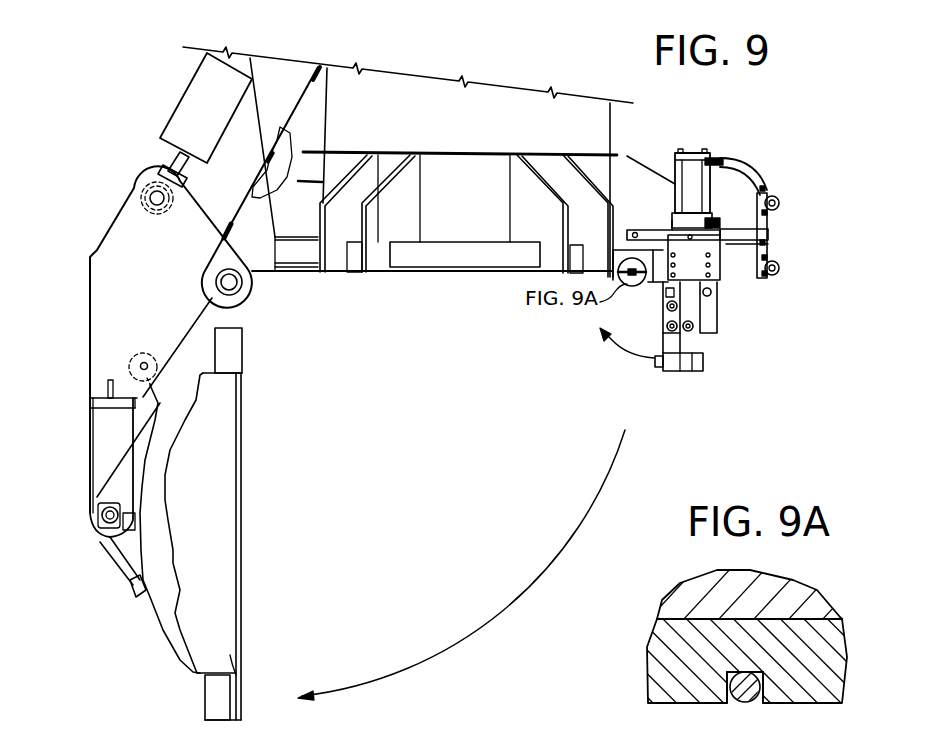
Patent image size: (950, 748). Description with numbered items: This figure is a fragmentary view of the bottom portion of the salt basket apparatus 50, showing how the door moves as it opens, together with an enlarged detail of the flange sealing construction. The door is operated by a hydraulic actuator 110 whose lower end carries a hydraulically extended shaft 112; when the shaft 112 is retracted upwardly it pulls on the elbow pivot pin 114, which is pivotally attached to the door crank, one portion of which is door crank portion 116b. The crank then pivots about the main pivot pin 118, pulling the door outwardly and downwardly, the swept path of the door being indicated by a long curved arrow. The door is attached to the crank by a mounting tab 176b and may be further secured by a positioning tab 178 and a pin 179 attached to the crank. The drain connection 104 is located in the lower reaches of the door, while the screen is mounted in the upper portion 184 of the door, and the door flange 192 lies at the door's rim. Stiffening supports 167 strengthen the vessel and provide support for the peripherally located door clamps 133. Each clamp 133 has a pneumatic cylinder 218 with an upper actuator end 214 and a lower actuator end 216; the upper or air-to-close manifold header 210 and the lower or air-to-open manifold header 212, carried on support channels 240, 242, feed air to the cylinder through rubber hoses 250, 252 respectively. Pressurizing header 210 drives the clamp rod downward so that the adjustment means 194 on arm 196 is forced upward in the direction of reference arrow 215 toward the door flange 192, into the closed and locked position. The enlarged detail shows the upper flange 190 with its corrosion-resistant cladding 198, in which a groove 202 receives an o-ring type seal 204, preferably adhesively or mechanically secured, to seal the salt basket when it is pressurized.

In FIG. 9, the salt basket apparatus 50 is at (128, 72).
In FIG. 9, the actuator 110 is at (178, 128).
In FIG. 9, the hydraulically extended shaft 112 is at (172, 153).
In FIG. 9, the elbow pivot pin 114 is at (150, 200).
In FIG. 9, the door crank portion 116b is at (105, 280).
In FIG. 9, the main pivot pin 118 is at (236, 285).
In FIG. 9, the stiffening supports 167 is at (413, 181).
In FIG. 9, the positioning tab 178 is at (130, 375).
In FIG. 9, the pin 179 is at (146, 358).
In FIG. 9, the mounting tab 176b is at (110, 545).
In FIG. 9, the drain connection 104 is at (120, 575).
In FIG. 9, the upper portion of door 184 is at (240, 655).
In FIG. 9, the door flange 192 is at (214, 706).
In FIG. 9, the upper actuator end 214 is at (700, 156).
In FIG. 9, the door clamp 133 is at (717, 158).
In FIG. 9, the rubber hose 250 is at (747, 166).
In FIG. 9, the pneumatic cylinder 218 is at (698, 187).
In FIG. 9, the air-to-close manifold header 210 is at (783, 206).
In FIG. 9, the air-to-open manifold header 212 is at (780, 275).
In FIG. 9, the lower actuator end 216 is at (673, 222).
In FIG. 9, the support channel 240 is at (732, 240).
In FIG. 9, the support channel 242 is at (760, 222).
In FIG. 9, the rubber hose 252 is at (755, 241).
In FIG. 9, the arm of clamp 196 is at (694, 342).
In FIG. 9, the adjustment means 194 is at (656, 368).
In FIG. 9, the reference arrow 215 is at (626, 358).
In FIG. 9A, the upper flange 190 is at (688, 594).
In FIG. 9A, the cladding 198 is at (655, 690).
In FIG. 9A, the groove 202 is at (730, 702).
In FIG. 9A, the o-ring type seal 204 is at (745, 697).